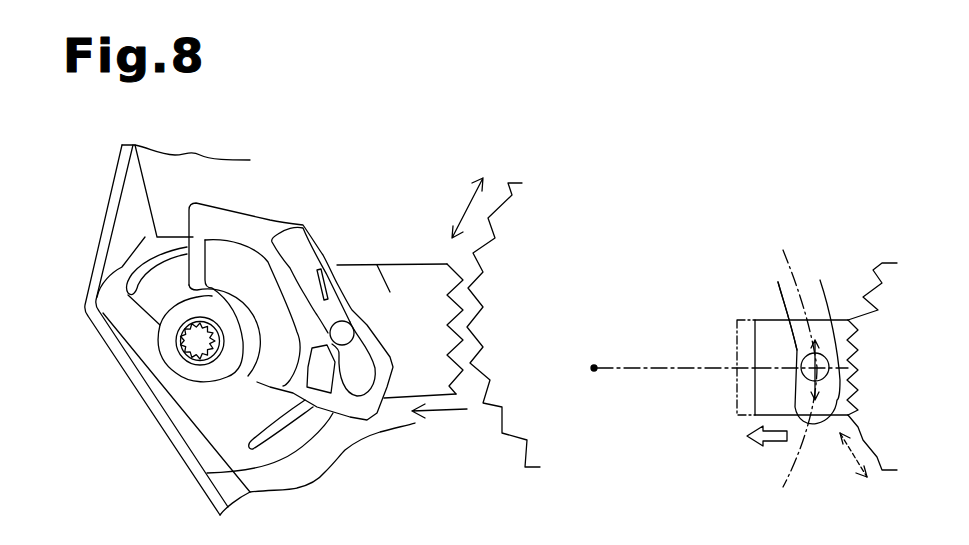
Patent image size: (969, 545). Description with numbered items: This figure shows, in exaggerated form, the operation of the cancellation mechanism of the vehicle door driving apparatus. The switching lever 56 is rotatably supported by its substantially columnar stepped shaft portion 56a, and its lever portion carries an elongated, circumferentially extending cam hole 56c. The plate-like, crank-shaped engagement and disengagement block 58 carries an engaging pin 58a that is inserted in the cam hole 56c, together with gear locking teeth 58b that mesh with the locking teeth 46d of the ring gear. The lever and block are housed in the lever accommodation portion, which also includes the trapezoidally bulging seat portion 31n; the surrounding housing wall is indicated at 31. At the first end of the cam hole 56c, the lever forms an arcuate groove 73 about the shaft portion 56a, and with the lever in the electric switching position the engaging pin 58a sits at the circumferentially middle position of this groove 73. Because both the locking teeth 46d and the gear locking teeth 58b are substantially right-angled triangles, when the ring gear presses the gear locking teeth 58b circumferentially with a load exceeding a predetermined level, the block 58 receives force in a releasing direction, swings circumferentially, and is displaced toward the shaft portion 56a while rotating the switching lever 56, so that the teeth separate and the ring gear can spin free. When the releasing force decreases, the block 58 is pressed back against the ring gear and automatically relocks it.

The bracket 31 is at (176, 456).
The seat portion 31n is at (122, 218).
The switching lever 56 is at (228, 212).
The shaft portion 56a is at (187, 342).
The cam hole 56c is at (296, 242).
The engagement and disengagement block 58 is at (360, 275).
The engaging pin 58a is at (344, 333).
The gear locking teeth 58b is at (852, 345).
The locking teeth 46d is at (875, 266).
The arcuate groove 73 is at (820, 430).